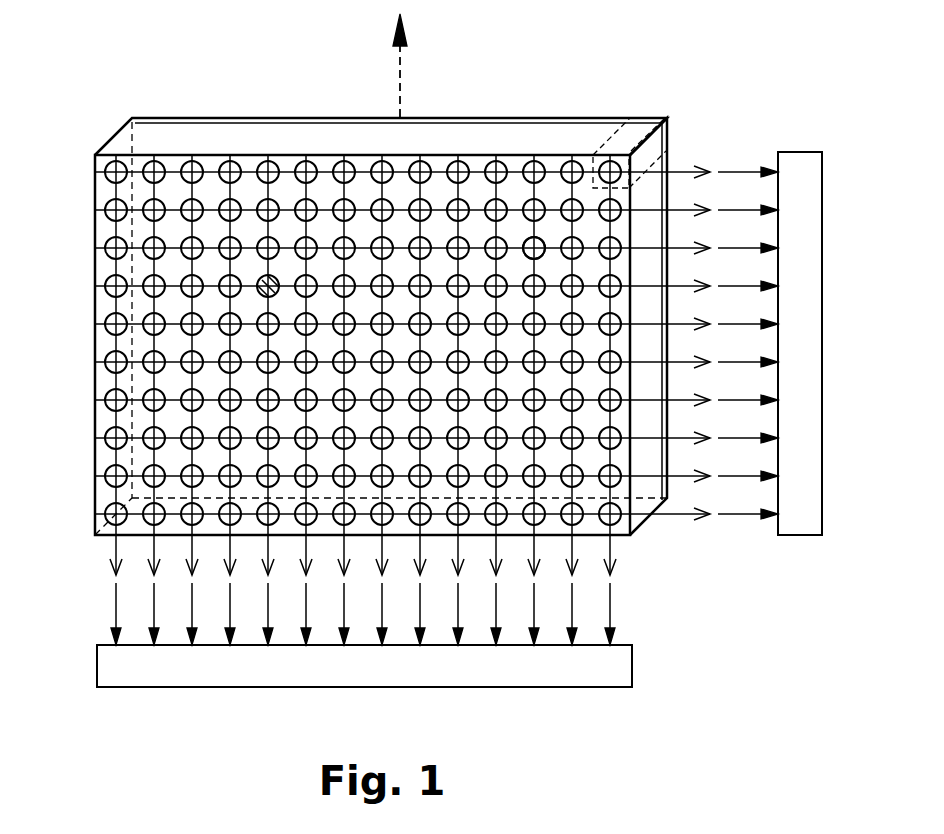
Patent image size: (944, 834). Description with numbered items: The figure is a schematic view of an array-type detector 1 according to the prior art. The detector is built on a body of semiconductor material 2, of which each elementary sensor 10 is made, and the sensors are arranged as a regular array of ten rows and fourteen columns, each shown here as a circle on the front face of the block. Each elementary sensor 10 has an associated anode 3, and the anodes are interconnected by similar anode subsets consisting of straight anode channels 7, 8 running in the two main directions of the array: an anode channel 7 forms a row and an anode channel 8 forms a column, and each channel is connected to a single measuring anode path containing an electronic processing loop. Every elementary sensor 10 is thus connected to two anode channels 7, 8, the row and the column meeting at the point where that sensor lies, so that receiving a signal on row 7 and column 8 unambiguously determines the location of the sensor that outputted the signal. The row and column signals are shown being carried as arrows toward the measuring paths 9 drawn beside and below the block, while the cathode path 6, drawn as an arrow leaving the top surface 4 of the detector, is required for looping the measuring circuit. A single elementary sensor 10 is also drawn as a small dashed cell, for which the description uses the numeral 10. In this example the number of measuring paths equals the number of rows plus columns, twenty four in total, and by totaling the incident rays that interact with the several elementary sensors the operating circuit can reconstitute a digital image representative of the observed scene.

The detector arrangement 1 is at (100, 130).
The semiconductor material 2 is at (656, 500).
The anode 3 is at (540, 238).
The top plate 4 is at (270, 137).
The cathode path 6 is at (403, 86).
The anode channel 7 is at (736, 478).
The anode channel 8 is at (610, 592).
The detector plates 9 is at (459, 419).
The elementary sensor 10 is at (623, 138).